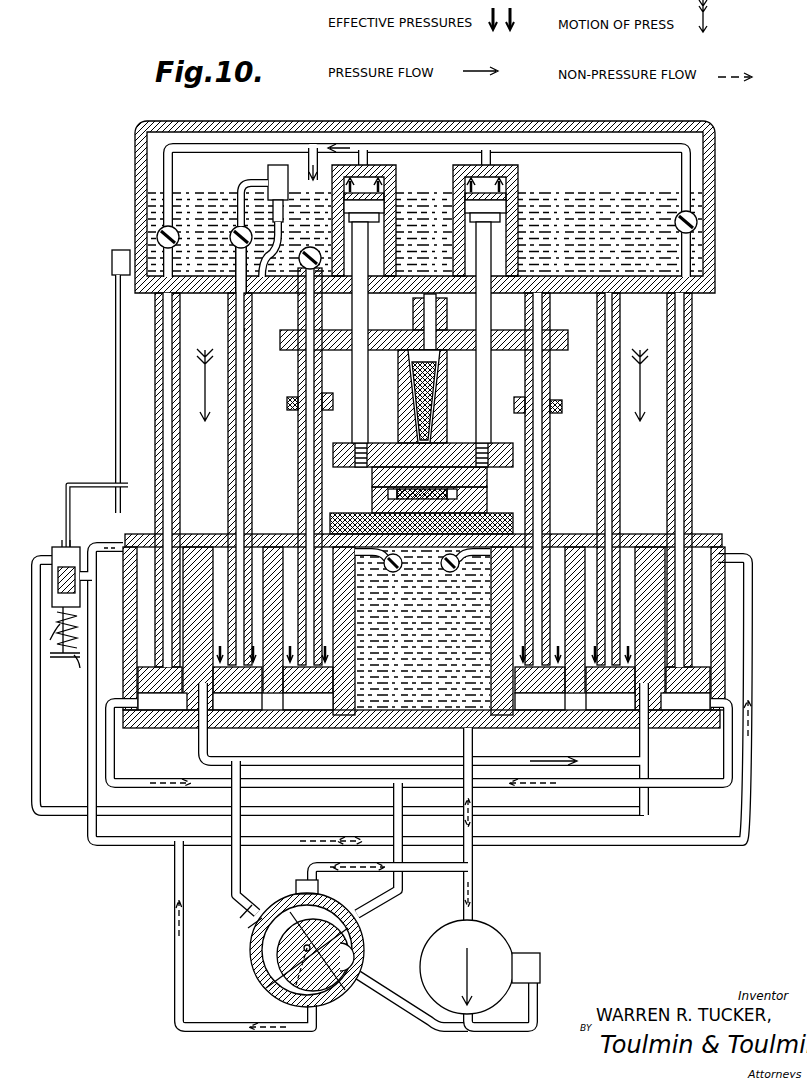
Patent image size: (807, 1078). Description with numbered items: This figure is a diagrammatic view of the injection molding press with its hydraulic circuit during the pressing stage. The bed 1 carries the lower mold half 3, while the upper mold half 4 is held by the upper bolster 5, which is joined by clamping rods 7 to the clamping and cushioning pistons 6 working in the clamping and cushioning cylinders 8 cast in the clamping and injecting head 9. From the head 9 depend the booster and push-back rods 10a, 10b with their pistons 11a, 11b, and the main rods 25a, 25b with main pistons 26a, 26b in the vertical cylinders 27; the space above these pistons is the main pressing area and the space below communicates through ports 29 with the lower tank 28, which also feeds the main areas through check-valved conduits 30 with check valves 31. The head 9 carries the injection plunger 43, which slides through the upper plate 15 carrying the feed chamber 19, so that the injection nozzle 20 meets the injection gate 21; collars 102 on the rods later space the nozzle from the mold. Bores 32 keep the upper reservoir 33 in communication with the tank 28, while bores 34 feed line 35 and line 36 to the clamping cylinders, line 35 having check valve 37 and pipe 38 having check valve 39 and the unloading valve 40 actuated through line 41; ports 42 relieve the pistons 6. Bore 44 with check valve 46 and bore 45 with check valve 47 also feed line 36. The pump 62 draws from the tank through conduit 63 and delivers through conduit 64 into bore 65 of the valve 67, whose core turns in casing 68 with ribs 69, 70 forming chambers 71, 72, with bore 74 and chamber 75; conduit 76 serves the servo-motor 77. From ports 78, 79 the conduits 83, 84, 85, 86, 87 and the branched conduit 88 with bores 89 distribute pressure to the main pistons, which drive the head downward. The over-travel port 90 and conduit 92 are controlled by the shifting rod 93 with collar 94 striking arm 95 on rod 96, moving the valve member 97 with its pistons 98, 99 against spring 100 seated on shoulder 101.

The bed 1 is at (718, 605).
The lower mold half 3 is at (472, 502).
The upper mold half 4 is at (372, 478).
The upper bolster 5 is at (494, 445).
The clamping and cushioning pistons 6 is at (425, 200).
The clamping rods 7 is at (369, 386).
The clamping and cushioning cylinders 8 is at (453, 175).
The clamping and injecting head 9 is at (135, 164).
The booster and push-back rod 10a is at (692, 382).
The booster and push-back rod 10b is at (206, 355).
The booster and push-back piston 11a is at (680, 628).
The booster and push-back piston 11b is at (168, 628).
The upper plate 15 is at (336, 350).
The feed chamber 19 is at (413, 310).
The injection nozzle 20 is at (440, 400).
The injection gate 21 is at (432, 440).
The main rods 25a is at (550, 384).
The main rods 25b is at (254, 370).
The main pistons 26a is at (575, 688).
The main pistons 26b is at (273, 688).
The vertical cylinders 27 is at (353, 715).
The lower liquid tank 28 is at (400, 712).
The ports 29 is at (325, 700).
The conduits 30 is at (272, 545).
The check valve 31 is at (465, 558).
The bores 32 is at (597, 437).
The oil reservoir 33 is at (692, 172).
The bores 34 is at (298, 388).
The line 35 is at (314, 150).
The line 36 is at (215, 145).
The check valve 37 is at (302, 265).
The pipe 38 is at (252, 183).
The check valve 39 is at (238, 228).
The unloading valve 40 is at (278, 165).
The line 41 is at (285, 228).
The ports 42 is at (322, 265).
The injection plunger 43 is at (436, 320).
The axial bore 44 is at (692, 410).
The axial bore 45 is at (172, 392).
The check valve 46 is at (698, 222).
The check valve 47 is at (157, 233).
The one-way variable delivery pump 62 is at (495, 935).
The conduit 63 is at (463, 749).
The conduit 64 is at (393, 998).
The bore 65 is at (322, 1003).
The valve 67 is at (246, 960).
The valve casing 68 is at (262, 969).
The rib 69 is at (322, 962).
The rib 70 is at (285, 975).
The chamber 71 is at (346, 993).
The chamber 72 is at (300, 918).
The bore 74 is at (350, 957).
The chamber 75 is at (300, 935).
The conduit 76 is at (518, 1030).
The servo-motor 77 is at (526, 953).
The port 78 is at (314, 1028).
The port 79 is at (245, 908).
The conduit 83 is at (231, 824).
The conduit 84 is at (446, 871).
The conduit 85 is at (393, 826).
The branched conduit 86 is at (130, 842).
The conduits 87 is at (131, 777).
The branched conduit 88 is at (240, 762).
The bores 89 is at (186, 546).
The over-travel port 90 is at (75, 588).
The conduit 92 is at (37, 762).
The shifting rod 93 is at (115, 383).
The adjustable collar 94 is at (58, 541).
The arm 95 is at (115, 485).
The rod 96 is at (66, 505).
The valve member 97 is at (73, 547).
The valve 98 is at (53, 553).
The piston 99 is at (72, 594).
The spring 100 is at (50, 643).
The shoulder 101 is at (78, 665).
The collars 102 is at (292, 411).